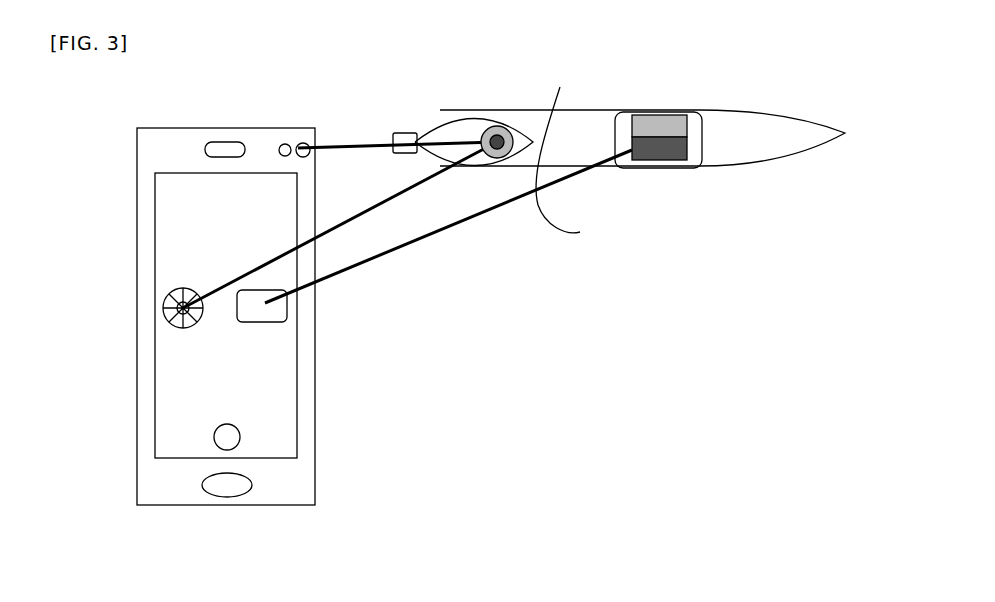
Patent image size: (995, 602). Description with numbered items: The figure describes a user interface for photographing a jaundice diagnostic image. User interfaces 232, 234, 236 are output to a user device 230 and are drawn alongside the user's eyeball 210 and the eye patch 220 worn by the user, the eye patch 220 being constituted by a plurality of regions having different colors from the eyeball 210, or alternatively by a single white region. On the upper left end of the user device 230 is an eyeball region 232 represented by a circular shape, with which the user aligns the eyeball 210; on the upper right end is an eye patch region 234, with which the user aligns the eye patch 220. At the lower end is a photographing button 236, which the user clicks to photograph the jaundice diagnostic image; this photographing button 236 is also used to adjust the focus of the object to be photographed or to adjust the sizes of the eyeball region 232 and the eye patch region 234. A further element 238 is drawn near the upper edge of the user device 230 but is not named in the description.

The eyeball 210 is at (473, 112).
The eye patch 220 is at (665, 160).
The user device 230 is at (127, 196).
The eyeball region 232 is at (183, 296).
The eye patch region 234 is at (265, 323).
The photographing button 236 is at (228, 436).
The camera of electronic device 238 is at (306, 145).